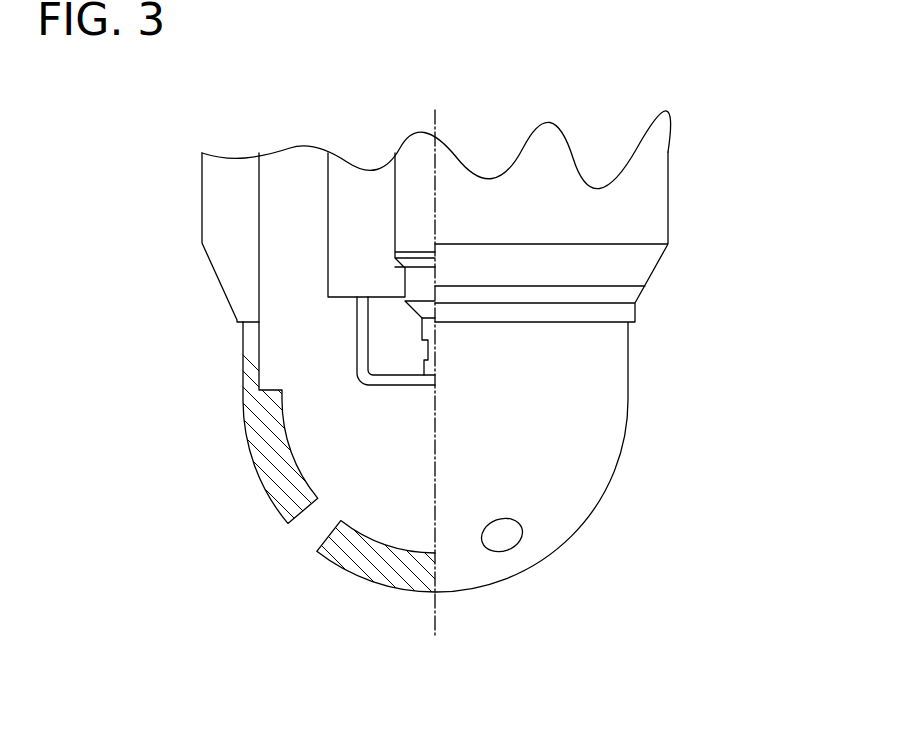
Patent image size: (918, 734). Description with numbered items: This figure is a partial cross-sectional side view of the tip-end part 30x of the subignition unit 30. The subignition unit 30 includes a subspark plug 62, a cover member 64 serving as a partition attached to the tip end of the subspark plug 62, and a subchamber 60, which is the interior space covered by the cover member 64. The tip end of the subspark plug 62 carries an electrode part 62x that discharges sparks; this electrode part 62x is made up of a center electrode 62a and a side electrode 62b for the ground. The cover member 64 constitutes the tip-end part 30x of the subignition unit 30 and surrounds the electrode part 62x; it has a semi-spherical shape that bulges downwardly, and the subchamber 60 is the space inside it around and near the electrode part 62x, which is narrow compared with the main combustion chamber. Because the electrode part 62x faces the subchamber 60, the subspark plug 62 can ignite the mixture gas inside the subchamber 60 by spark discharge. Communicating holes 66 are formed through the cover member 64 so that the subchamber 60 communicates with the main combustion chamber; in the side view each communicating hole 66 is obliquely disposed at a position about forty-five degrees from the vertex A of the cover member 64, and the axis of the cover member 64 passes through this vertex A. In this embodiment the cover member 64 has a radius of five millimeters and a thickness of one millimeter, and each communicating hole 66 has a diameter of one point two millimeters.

The subignition unit 30 is at (367, 367).
The tip-end part 30x is at (660, 125).
The subchamber 60 is at (311, 367).
The subspark plug 62 is at (378, 287).
The center electrode 62a is at (420, 387).
The side electrode 62b is at (380, 387).
The electrode part 62x is at (378, 396).
The cover member 64 is at (355, 575).
The communicating hole 66 is at (297, 512).
The vertex A is at (427, 596).